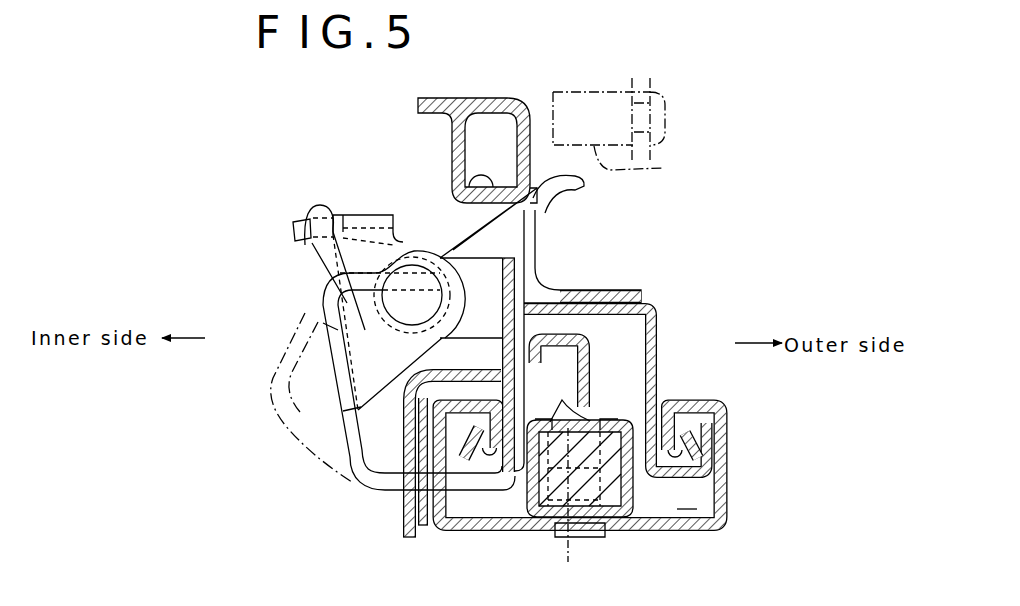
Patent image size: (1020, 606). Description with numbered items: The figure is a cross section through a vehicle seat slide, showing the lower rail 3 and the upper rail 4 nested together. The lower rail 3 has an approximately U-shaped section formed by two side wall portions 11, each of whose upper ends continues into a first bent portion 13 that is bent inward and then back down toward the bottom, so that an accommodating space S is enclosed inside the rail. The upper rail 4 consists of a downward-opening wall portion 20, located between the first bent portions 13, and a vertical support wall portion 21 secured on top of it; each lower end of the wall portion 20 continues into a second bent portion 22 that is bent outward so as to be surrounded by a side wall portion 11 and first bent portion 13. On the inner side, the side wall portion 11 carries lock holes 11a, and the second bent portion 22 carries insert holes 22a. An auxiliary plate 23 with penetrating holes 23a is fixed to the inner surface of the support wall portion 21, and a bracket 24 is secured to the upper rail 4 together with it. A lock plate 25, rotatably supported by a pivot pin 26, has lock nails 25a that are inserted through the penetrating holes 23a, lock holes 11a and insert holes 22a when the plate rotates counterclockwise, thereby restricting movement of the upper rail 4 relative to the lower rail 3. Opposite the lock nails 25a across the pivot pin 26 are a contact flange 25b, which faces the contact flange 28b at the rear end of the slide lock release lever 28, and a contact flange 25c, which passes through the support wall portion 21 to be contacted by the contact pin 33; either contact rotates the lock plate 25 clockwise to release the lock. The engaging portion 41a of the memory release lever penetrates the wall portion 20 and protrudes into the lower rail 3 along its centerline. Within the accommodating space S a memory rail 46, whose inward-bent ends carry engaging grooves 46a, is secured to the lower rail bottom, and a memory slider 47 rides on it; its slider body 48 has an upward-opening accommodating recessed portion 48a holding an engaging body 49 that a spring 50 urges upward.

The lower rail 3 is at (716, 537).
The upper rail 4 is at (665, 297).
The side wall portion 11 is at (730, 490).
The lock hole 11a is at (432, 526).
The first bent portion 13 is at (708, 400).
The wall portion 20 is at (656, 322).
The support wall portion 21 is at (530, 163).
The second bent portion 22 is at (463, 405).
The insert hole 22a is at (473, 512).
The auxiliary plate 23 is at (415, 368).
The penetrating hole 23a is at (408, 503).
The bracket 24 is at (447, 299).
The lock plate 25 is at (318, 252).
The lock nail 25a is at (367, 481).
The contact flange 25b is at (535, 246).
The contact flange 25c is at (583, 184).
The pivot pin 26 is at (406, 272).
The slide lock release lever 28 is at (418, 112).
The contact flange 28b is at (452, 185).
The contact pin 33 is at (649, 165).
The engaging portion 41a is at (612, 386).
The memory rail 46 is at (637, 535).
The engaging groove 46a is at (575, 396).
The memory slider 47 is at (628, 408).
The slider body 48 is at (543, 524).
The accommodating recessed portion 48a is at (574, 512).
The engaging body 49 is at (528, 494).
The spring 50 is at (600, 530).
The accommodating space S is at (687, 497).